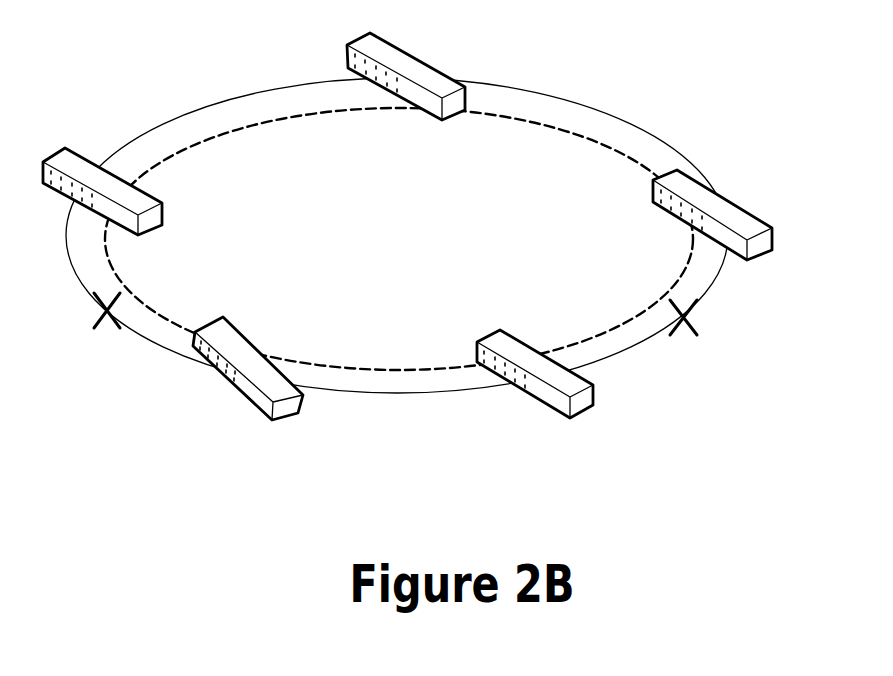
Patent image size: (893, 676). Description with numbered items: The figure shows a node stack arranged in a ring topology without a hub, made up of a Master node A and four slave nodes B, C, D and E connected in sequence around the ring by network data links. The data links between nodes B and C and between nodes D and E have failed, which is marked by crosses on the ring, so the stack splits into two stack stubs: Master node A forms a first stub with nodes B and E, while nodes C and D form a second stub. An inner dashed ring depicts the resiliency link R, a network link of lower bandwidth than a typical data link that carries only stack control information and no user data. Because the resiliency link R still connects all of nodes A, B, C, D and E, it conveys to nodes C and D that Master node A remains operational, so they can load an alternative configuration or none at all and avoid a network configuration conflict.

The Master node A is at (407, 71).
The slave node B is at (722, 209).
The slave node C is at (535, 362).
The slave node D is at (260, 367).
The slave node E is at (125, 191).
The resiliency link R is at (553, 131).